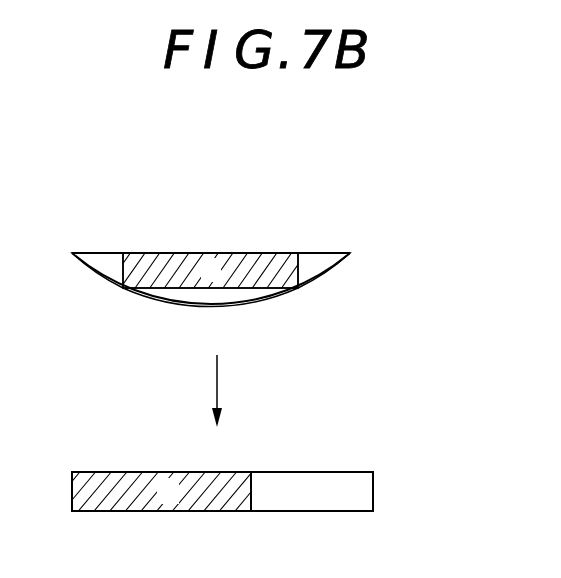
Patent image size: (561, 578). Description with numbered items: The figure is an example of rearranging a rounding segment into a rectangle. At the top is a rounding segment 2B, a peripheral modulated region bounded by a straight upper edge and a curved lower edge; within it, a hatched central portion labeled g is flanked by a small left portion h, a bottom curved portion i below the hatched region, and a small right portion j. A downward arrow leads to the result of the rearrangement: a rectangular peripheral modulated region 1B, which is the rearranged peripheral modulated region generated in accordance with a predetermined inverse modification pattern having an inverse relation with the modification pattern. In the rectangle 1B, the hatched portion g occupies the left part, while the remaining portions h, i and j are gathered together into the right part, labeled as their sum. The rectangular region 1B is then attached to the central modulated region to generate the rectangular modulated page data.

The rounding segment 2B is at (250, 304).
The rectangular peripheral modulated region 1B is at (381, 493).
The hatched central area g is at (185, 382).
The left edge area h of lens h is at (97, 270).
The bottom area i of lens i is at (210, 295).
The right edge area j of lens j is at (324, 270).